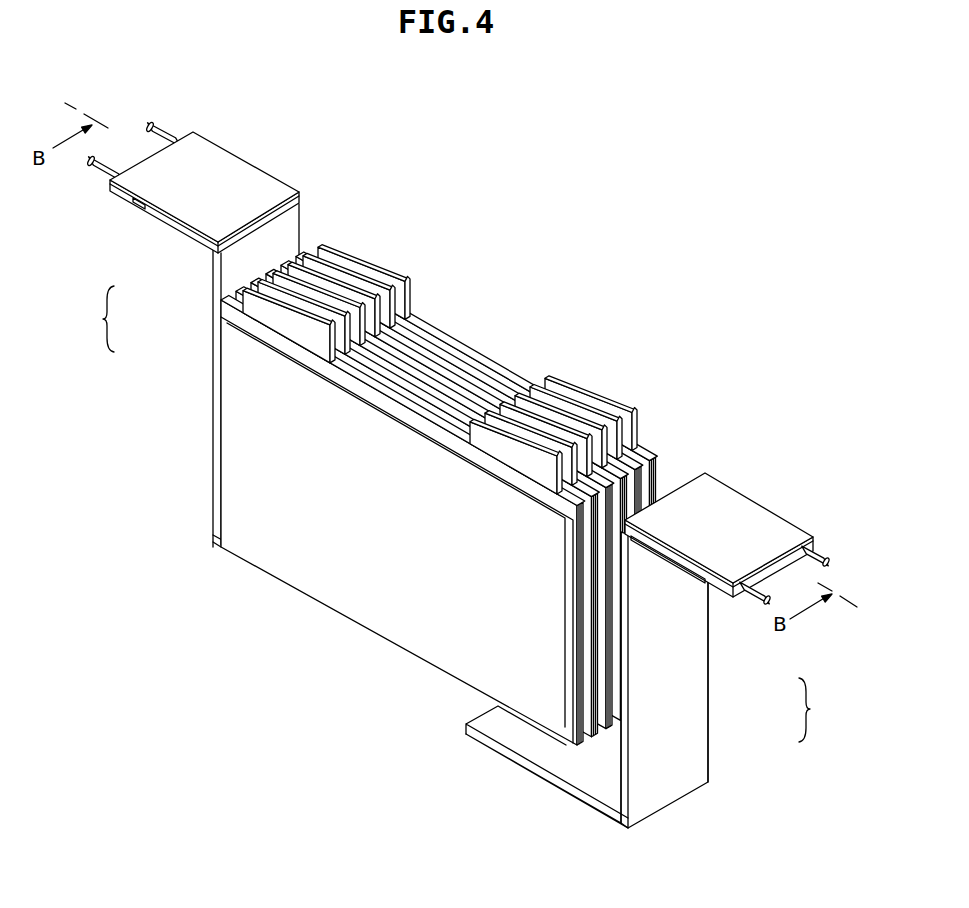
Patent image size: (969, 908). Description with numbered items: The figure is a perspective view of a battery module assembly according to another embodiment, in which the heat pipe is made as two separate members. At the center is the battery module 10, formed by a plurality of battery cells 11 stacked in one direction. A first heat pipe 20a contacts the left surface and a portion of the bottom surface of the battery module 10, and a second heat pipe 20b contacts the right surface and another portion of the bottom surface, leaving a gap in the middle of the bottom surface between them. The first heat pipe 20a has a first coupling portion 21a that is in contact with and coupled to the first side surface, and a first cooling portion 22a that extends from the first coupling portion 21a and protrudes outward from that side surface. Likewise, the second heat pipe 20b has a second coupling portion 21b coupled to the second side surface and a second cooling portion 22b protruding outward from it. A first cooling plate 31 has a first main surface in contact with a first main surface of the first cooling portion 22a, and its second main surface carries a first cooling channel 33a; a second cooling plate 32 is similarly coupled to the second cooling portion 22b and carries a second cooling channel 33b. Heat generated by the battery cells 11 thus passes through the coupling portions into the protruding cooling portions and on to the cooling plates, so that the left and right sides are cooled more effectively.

The battery module 10 is at (439, 495).
The battery cells 11 is at (444, 340).
The first heat pipe 20a is at (312, 453).
The first coupling portion 21a is at (213, 347).
The first cooling portion 22a is at (140, 208).
The second heat pipe 20b is at (662, 658).
The second coupling portion 21b is at (695, 744).
The second cooling portion 22b is at (692, 568).
The first cooling plate 31 is at (248, 158).
The second cooling plate 32 is at (771, 502).
The first cooling channel 33a is at (163, 122).
The second cooling channel 33b is at (819, 548).